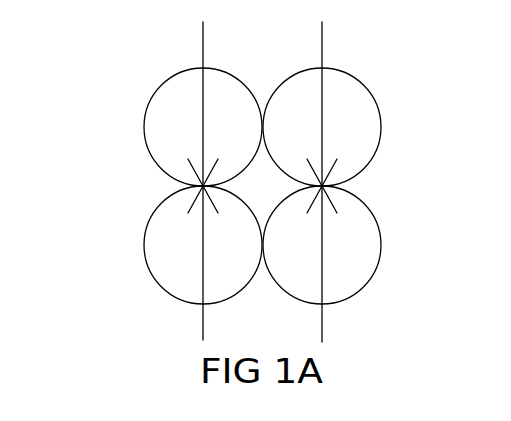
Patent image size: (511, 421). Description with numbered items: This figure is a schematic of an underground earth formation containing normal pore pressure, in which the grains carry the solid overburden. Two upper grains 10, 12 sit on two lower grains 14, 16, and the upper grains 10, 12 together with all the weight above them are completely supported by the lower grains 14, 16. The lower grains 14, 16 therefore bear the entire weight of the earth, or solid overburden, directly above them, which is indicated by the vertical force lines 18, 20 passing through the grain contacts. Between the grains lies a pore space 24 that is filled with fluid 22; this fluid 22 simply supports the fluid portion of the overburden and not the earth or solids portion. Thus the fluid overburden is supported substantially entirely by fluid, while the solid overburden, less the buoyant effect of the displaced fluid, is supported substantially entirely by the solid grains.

The upper grain 10 is at (168, 123).
The upper grain 12 is at (353, 122).
The lower grain 14 is at (160, 240).
The lower grain 16 is at (340, 285).
The force line 18 is at (203, 53).
The force line 20 is at (323, 53).
The fluid 22 is at (265, 193).
The pore space 24 is at (278, 165).